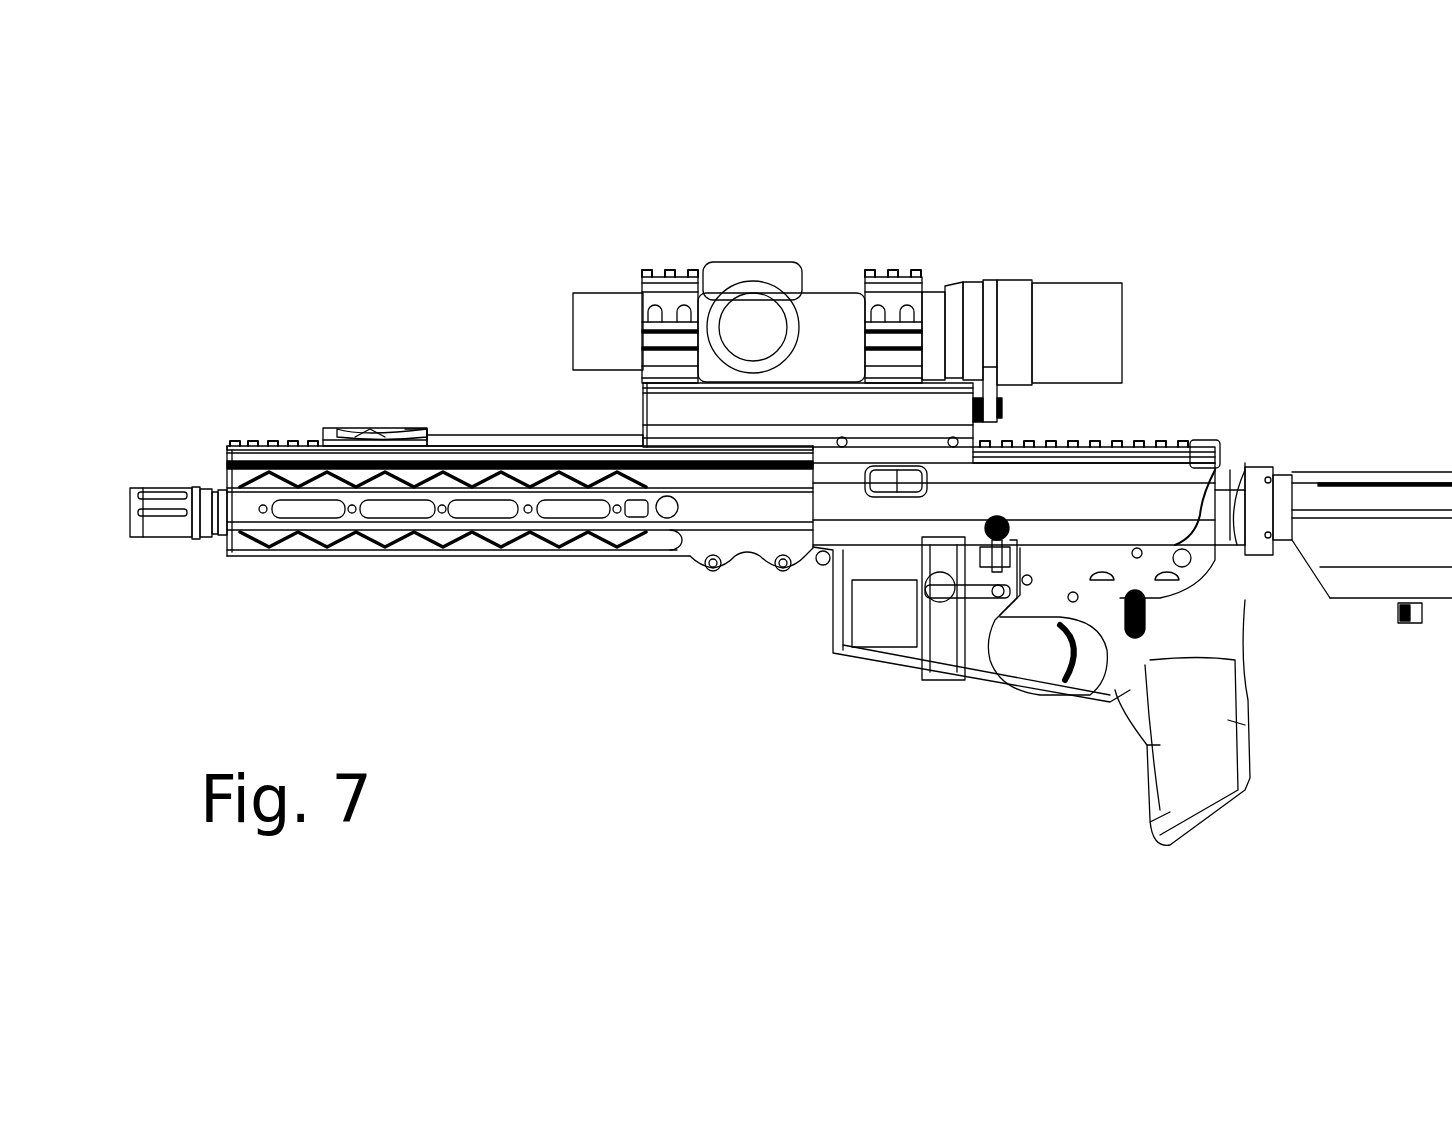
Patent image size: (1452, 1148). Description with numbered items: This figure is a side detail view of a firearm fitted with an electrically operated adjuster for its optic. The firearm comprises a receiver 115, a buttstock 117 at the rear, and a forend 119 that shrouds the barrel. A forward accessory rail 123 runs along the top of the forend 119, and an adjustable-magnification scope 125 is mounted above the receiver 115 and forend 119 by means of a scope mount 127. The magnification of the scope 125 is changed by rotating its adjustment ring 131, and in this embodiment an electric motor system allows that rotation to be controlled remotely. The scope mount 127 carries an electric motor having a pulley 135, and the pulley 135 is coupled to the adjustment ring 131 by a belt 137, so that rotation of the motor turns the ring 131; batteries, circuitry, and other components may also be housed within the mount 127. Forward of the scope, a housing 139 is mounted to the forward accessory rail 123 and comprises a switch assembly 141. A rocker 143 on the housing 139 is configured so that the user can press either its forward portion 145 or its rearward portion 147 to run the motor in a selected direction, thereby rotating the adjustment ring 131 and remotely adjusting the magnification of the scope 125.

The receiver 115 is at (863, 685).
The buttstock 117 is at (1372, 462).
The forend 119 is at (280, 560).
The forward accessory rail 123 is at (258, 440).
The adjustable-magnification scope 125 is at (1100, 282).
The scope mount 127 is at (648, 418).
The adjustment ring 131 is at (982, 310).
The pulley 135 is at (1003, 404).
The belt 137 is at (990, 330).
The housing 139 is at (503, 436).
The switch assembly 141 is at (390, 436).
The rocker 143 is at (355, 436).
The forward portion 145 is at (350, 430).
The rearward portion 147 is at (427, 433).